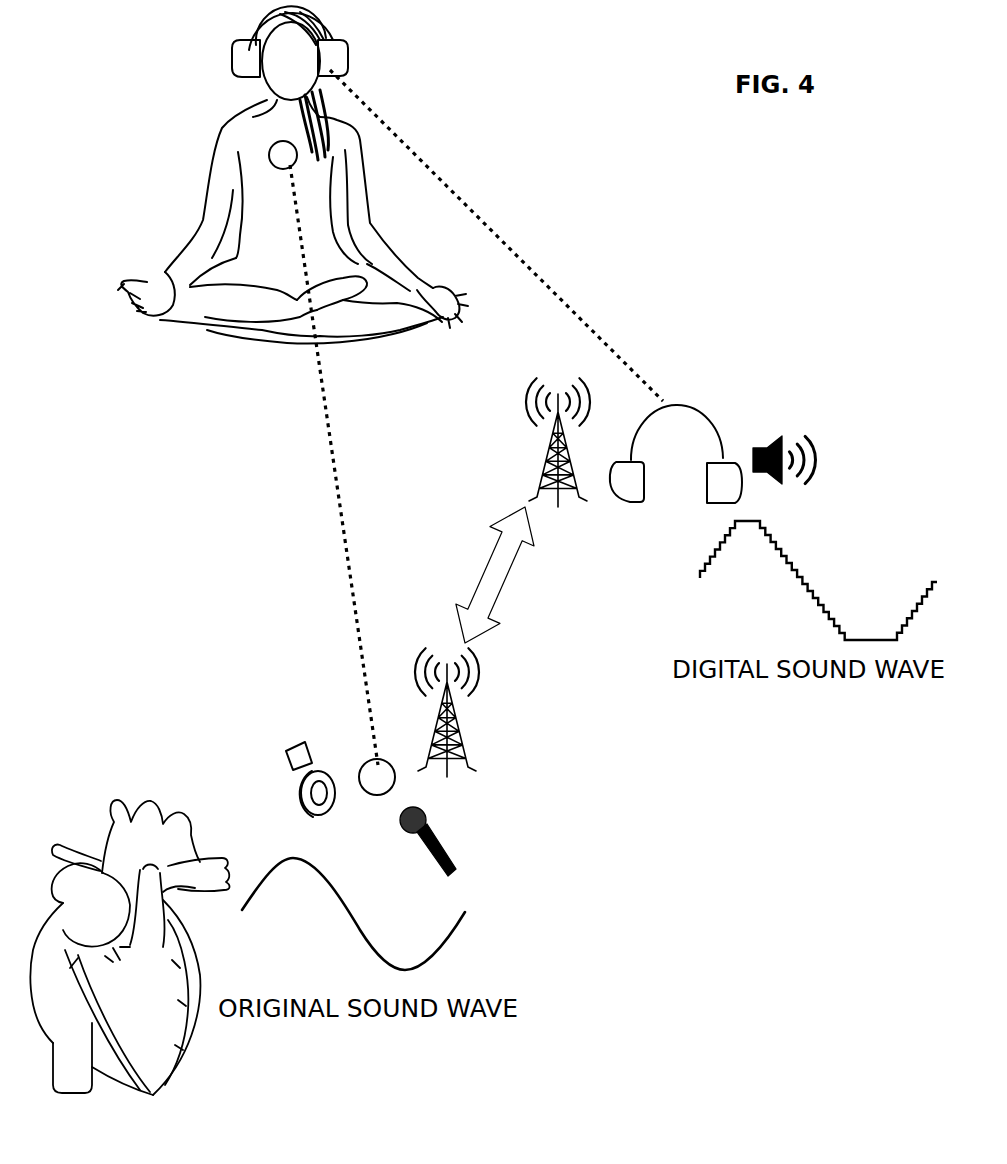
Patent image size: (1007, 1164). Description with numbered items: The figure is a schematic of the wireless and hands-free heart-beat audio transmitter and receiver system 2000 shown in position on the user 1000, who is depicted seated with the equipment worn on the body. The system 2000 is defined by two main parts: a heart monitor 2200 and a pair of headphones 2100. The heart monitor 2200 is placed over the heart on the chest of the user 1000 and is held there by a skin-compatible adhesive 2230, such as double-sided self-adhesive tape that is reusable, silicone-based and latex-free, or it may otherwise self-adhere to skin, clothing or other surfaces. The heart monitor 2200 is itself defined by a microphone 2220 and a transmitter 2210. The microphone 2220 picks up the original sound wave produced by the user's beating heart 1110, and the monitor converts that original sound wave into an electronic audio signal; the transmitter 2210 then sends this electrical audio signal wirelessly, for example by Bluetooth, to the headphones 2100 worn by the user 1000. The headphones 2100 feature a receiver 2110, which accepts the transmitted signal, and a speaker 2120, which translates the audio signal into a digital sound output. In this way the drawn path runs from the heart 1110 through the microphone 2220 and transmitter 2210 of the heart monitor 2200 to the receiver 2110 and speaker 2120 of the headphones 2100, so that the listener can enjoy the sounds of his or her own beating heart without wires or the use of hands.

The wireless and hands-free heart-beat audio transmitter and receiver system 2000 is at (137, 50).
The user 1000 is at (301, 257).
The beating heart 1110 is at (157, 1011).
The headphones 2100 is at (333, 53).
The receiver 2110 is at (552, 460).
The speaker 2120 is at (813, 447).
The heart monitor 2200 is at (268, 158).
The transmitter 2210 is at (457, 740).
The microphone 2220 is at (452, 850).
The skin-compatible adhesive 2230 is at (288, 783).